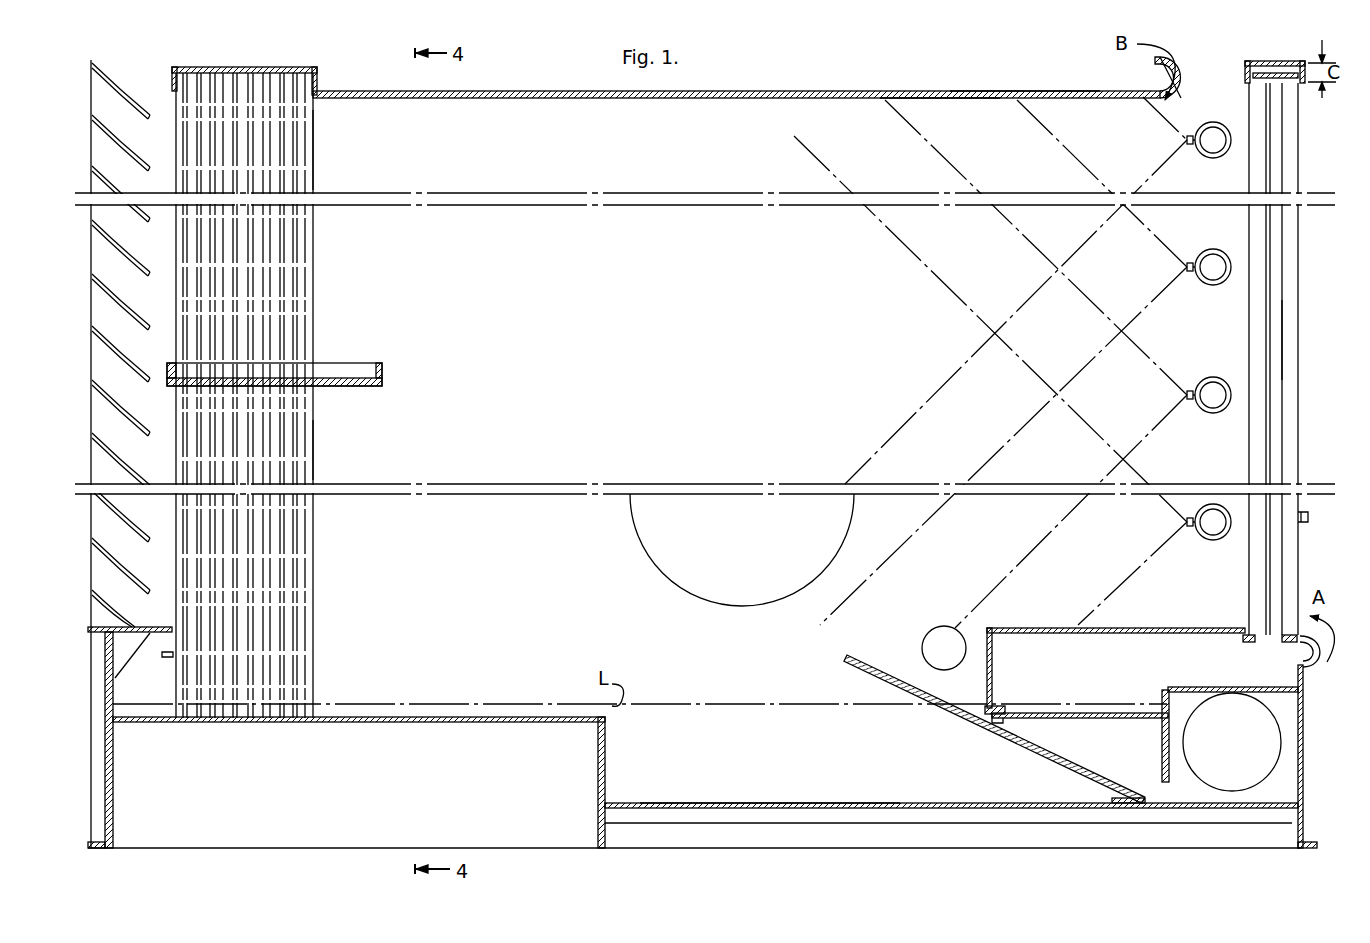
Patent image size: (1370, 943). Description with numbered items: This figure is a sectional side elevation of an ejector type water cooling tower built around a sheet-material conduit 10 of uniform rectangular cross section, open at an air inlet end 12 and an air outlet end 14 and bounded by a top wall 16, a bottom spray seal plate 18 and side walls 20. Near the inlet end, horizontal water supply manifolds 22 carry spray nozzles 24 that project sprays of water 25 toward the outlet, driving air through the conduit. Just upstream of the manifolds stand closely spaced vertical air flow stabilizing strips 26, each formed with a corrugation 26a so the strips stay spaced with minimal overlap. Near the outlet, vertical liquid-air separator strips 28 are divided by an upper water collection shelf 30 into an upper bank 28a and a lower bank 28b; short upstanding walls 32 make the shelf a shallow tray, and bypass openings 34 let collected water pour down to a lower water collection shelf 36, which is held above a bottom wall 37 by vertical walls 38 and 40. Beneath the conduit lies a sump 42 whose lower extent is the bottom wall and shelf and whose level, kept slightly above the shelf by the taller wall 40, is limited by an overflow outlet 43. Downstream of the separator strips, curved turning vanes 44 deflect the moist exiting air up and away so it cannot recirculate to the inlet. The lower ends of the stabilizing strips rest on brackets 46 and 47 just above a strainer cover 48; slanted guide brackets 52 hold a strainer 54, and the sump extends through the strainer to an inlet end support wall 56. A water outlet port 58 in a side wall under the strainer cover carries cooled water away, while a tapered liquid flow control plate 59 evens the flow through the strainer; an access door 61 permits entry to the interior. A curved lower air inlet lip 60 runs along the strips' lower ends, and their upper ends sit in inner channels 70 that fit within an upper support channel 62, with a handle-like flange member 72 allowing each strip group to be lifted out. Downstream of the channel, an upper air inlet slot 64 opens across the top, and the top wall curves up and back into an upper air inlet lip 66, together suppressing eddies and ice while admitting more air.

The conduit 10 is at (1038, 62).
The air inlet end 12 is at (1294, 333).
The air outlet end 14 is at (84, 80).
The top wall 16 is at (935, 92).
The bottom spray seal plate 18 is at (1158, 628).
The side walls 20 is at (773, 71).
The water supply manifolds 22 is at (1208, 158).
The spray nozzles 24 is at (1189, 146).
The sprays of water 25 is at (1160, 118).
The air flow stabilizing strips 26 is at (1300, 390).
The corrugation 26a is at (1283, 340).
The liquid-air separator strips 28 is at (259, 84).
The upper bank of separator strips 28a is at (314, 150).
The lower bank of separator strips 28b is at (314, 466).
The upper water collection shelf 30 is at (283, 386).
The upstanding walls 32 is at (170, 365).
The bypass openings 34 is at (360, 388).
The lower water collection shelf 36 is at (402, 716).
The bottom wall 37 is at (775, 803).
The vertical wall 38 is at (606, 745).
The vertical wall 40 is at (108, 703).
The sump 42 is at (738, 744).
The overflow outlet 43 is at (936, 636).
The curved turning vanes 44 is at (140, 105).
The bracket 46 is at (1248, 643).
The bracket 47 is at (1290, 643).
The strainer cover 48 is at (1078, 712).
The slanted guide brackets 52 is at (868, 658).
The strainer 54 is at (1015, 745).
The inlet end support wall 56 is at (1303, 769).
The water outlet port 58 is at (1281, 722).
The tapered liquid flow control plate 59 is at (1161, 748).
The curved lower air inlet lip 60 is at (1317, 665).
The access door 61 is at (650, 558).
The upper support channel 62 is at (1281, 62).
The upper air inlet slot 64 is at (1216, 82).
The upper air inlet lip 66 is at (1158, 70).
The inner channels 70 is at (1290, 80).
The flange member 72 is at (1308, 523).